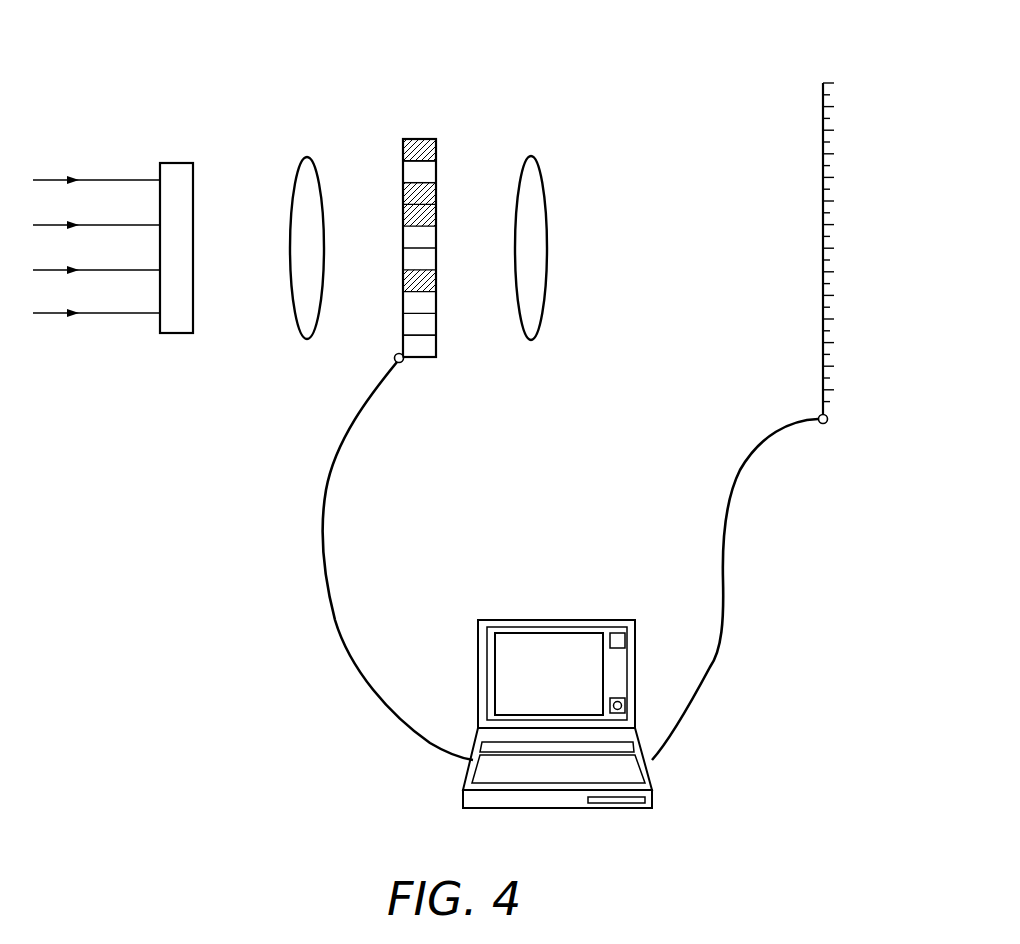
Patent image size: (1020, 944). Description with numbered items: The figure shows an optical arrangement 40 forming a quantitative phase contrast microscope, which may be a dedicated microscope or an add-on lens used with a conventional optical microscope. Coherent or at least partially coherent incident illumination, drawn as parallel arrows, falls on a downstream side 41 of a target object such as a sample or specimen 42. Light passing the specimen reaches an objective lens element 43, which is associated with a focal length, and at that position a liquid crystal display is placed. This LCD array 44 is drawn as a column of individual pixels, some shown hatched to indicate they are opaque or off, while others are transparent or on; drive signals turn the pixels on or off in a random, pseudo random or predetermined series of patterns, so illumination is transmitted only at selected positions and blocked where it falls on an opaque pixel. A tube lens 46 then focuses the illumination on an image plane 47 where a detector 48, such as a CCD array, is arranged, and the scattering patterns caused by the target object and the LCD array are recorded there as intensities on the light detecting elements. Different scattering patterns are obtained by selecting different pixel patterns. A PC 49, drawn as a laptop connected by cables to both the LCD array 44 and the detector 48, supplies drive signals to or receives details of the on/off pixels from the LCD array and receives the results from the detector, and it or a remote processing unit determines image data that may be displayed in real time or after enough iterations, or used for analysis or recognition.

The optical arrangement 40 is at (249, 53).
The downstream side 41 is at (160, 320).
The specimen 42 is at (172, 163).
The objective lens element 43 is at (300, 165).
The LCD array 44 is at (430, 358).
The tube lens 46 is at (532, 157).
The image plane 47 is at (820, 434).
The detector 48 is at (822, 112).
The PC 49 is at (562, 808).